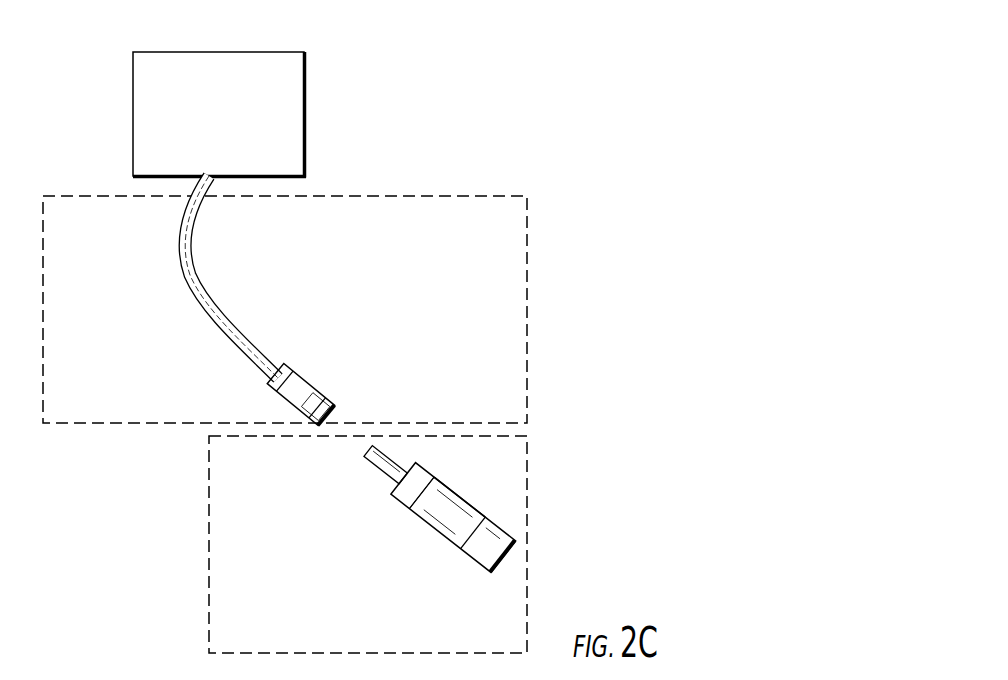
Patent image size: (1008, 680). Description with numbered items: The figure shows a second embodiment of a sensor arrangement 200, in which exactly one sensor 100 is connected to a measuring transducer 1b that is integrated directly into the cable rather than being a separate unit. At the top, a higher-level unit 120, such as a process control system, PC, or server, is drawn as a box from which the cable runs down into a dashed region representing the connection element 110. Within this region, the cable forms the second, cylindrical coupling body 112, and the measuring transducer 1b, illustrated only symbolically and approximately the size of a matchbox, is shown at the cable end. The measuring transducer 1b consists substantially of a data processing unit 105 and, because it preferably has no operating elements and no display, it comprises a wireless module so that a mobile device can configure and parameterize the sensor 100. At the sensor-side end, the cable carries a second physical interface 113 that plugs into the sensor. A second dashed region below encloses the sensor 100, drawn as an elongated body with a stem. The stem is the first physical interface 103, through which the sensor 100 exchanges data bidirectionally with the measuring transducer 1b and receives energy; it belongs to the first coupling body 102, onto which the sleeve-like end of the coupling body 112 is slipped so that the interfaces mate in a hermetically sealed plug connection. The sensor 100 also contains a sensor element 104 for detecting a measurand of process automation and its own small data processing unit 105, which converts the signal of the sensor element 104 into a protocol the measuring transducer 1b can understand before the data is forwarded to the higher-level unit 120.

The sensor arrangement 200 is at (660, 48).
The connection element 110 is at (545, 187).
The higher-level unit 120 is at (278, 132).
The second coupling body 112 is at (250, 380).
The measuring transducer 1b is at (322, 368).
The second physical interface 113 is at (325, 400).
The data processing unit 105 is at (345, 535).
The sensor 100 is at (550, 484).
The sensor element 104 is at (497, 538).
The first physical interface 103 is at (385, 472).
The first coupling body 102 is at (428, 540).